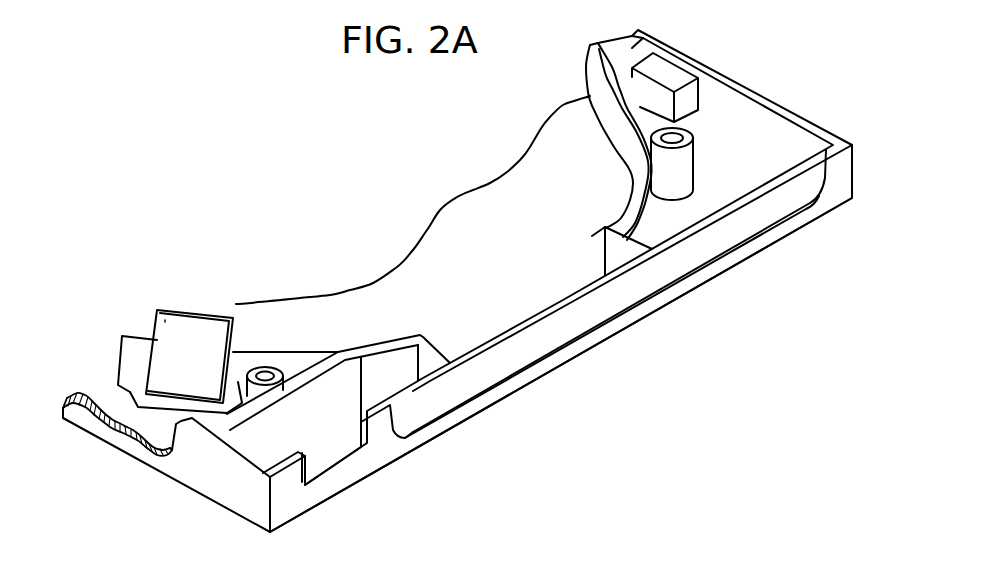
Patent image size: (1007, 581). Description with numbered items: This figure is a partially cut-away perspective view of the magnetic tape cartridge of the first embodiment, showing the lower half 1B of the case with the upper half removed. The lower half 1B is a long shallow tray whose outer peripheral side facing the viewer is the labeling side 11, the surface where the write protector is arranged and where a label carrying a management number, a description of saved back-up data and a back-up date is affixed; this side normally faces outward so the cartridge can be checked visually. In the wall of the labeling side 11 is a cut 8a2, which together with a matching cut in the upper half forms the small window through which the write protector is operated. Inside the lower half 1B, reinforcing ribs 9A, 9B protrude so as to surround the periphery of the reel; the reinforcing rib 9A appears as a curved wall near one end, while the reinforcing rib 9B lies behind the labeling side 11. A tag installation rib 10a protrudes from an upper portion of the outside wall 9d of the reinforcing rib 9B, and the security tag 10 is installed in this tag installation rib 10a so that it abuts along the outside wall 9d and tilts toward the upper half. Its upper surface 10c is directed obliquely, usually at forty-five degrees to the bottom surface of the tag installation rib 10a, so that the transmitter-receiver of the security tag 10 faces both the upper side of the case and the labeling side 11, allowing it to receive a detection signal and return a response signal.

The lower half 1B is at (210, 463).
The cut 8a2 is at (326, 450).
The reinforcing rib 9A is at (601, 84).
The reinforcing rib 9B is at (124, 350).
The outside wall 9d is at (302, 367).
The security tag 10 is at (183, 306).
The tag installation rib 10a is at (117, 397).
The upper surface 10c is at (190, 370).
The labeling side 11 is at (605, 300).